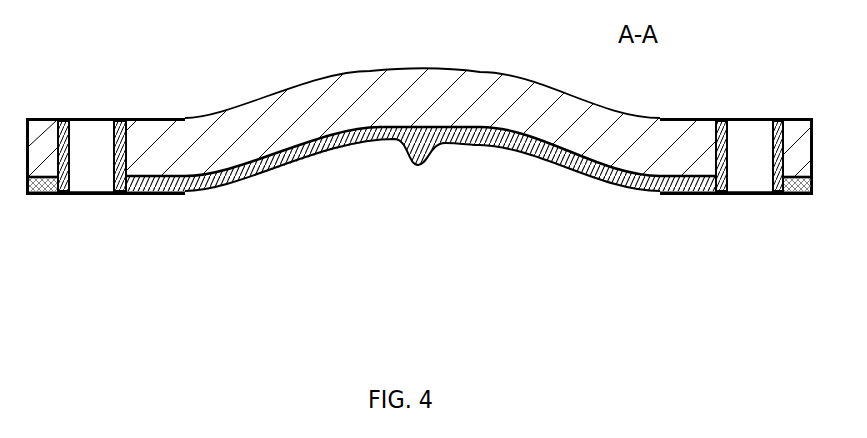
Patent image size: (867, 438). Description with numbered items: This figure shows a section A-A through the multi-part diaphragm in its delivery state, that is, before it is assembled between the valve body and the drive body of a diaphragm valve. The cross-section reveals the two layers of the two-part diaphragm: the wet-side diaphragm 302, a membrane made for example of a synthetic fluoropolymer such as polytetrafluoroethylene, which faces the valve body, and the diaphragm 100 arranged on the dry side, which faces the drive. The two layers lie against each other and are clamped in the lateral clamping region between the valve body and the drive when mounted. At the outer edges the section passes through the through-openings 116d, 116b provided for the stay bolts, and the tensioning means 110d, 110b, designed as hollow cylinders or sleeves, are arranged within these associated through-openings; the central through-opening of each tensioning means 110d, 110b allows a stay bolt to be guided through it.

The diaphragm 100 is at (328, 95).
The tensioning means 110d is at (127, 117).
The tensioning means 110b is at (785, 118).
The through-opening 116d is at (103, 173).
The through-opening 116b is at (748, 170).
The wet-side diaphragm 302 is at (277, 165).